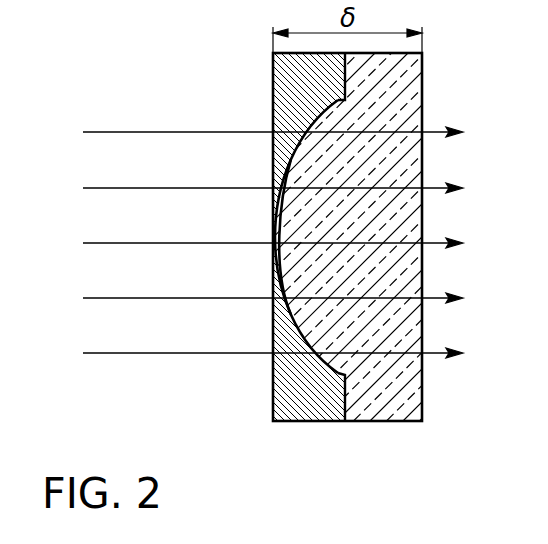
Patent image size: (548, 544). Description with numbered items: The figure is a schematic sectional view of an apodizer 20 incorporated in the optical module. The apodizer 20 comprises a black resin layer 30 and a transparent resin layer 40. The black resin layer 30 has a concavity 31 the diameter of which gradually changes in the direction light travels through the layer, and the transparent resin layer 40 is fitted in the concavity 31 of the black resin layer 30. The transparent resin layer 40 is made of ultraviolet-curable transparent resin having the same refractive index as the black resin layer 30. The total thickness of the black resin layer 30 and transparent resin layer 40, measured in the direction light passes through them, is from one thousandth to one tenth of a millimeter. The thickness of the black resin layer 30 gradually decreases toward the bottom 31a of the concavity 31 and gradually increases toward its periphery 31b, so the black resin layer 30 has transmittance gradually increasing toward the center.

The apodizer 20 is at (317, 421).
The black resin layer 30 is at (277, 403).
The concavity 31 is at (284, 326).
The bottom of the concavity 31a is at (278, 268).
The periphery of the concavity 31b is at (345, 375).
The transparent resin layer 40 is at (412, 383).